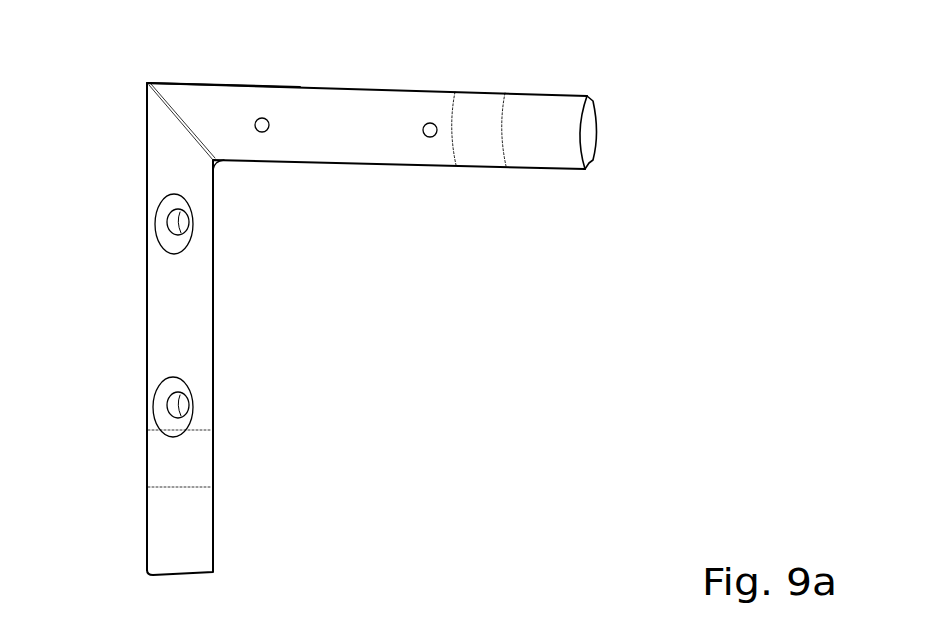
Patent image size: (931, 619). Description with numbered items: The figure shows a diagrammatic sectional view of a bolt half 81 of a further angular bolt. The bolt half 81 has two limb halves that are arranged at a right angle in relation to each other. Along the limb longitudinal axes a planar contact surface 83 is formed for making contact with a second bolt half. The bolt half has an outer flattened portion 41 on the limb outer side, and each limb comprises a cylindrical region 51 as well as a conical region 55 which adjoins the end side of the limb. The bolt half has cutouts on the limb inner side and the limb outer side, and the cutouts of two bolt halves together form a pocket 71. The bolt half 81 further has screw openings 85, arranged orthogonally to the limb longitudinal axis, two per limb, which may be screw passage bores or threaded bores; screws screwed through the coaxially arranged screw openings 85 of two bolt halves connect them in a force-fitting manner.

The bolt half 81 is at (446, 59).
The outer flattened portion 41 is at (188, 82).
The cylindrical region 51 is at (147, 327).
The conical region 55 is at (147, 505).
The pocket 71 is at (596, 108).
The planar contact surface 83 is at (597, 135).
The screw openings 85 is at (264, 118).